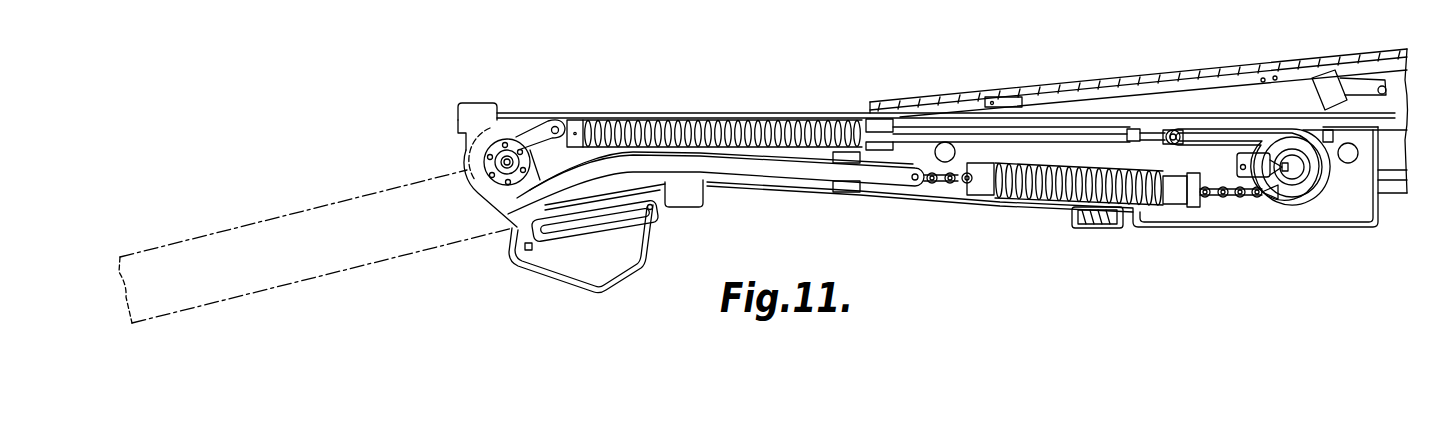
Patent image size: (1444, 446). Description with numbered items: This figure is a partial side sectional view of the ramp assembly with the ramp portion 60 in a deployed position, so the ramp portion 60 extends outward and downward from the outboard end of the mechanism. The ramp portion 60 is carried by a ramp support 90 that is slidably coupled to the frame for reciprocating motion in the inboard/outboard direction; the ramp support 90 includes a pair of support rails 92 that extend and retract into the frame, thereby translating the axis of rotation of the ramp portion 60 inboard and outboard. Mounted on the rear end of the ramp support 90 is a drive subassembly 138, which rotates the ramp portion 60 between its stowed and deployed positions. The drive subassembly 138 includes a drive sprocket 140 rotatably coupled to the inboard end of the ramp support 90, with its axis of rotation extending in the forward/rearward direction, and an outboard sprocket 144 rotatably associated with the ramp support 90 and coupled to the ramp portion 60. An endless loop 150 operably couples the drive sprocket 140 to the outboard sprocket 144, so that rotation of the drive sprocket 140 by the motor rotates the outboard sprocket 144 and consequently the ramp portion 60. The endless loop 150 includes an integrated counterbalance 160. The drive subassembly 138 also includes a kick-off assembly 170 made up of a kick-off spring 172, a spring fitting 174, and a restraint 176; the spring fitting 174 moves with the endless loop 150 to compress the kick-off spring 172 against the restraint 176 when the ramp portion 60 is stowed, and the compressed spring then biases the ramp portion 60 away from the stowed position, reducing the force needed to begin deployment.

The ramp portion 60 is at (389, 267).
The ramp support 90 is at (1155, 234).
The support rails 92 is at (735, 113).
The drive subassembly 138 is at (1277, 210).
The drive sprocket 140 is at (1270, 198).
The outboard sprocket 144 is at (559, 128).
The endless loop 150 is at (1330, 192).
The counterbalance 160 is at (1015, 210).
The kick-off assembly 170 is at (866, 88).
The kick-off spring 172 is at (777, 122).
The spring fitting 174 is at (578, 121).
The restraint 176 is at (880, 119).